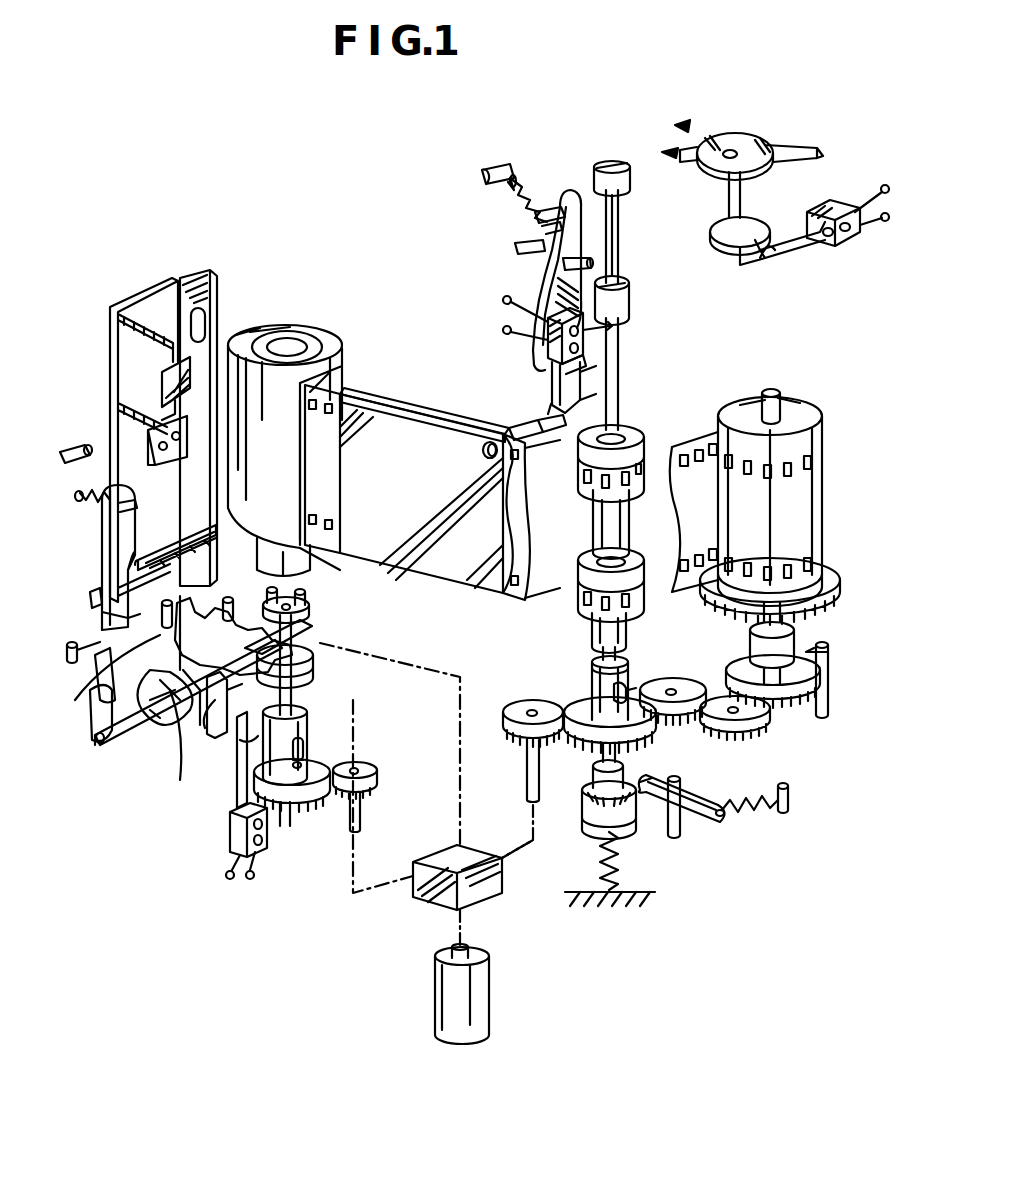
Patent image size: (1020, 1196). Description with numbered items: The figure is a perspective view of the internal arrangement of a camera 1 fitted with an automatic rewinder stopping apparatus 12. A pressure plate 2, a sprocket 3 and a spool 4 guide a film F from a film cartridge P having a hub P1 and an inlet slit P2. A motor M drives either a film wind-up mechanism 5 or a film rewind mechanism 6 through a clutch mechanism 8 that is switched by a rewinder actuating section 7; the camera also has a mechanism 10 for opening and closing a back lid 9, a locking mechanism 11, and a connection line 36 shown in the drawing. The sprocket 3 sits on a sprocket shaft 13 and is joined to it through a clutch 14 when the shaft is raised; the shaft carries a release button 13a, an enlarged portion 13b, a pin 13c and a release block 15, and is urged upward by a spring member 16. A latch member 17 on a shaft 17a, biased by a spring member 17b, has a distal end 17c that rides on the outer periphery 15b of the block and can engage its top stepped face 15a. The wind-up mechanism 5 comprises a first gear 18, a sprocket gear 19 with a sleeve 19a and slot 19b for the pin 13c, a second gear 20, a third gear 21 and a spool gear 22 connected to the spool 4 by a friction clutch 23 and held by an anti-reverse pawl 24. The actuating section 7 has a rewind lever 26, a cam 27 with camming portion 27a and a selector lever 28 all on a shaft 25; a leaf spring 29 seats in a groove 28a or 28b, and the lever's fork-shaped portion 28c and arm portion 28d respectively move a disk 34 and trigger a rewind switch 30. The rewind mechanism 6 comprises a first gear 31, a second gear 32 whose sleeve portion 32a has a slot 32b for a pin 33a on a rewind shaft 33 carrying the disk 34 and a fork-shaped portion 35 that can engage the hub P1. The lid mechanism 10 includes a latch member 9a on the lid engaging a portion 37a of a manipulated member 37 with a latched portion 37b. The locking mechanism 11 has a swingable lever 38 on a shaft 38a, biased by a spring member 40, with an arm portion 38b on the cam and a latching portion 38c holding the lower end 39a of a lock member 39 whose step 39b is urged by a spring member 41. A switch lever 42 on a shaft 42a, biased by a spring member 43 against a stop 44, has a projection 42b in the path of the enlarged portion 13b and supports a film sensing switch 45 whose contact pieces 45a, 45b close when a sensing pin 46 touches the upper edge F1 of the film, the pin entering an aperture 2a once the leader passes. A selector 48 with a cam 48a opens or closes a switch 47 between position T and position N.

The camera 1 is at (333, 165).
The pressure plate 2 is at (432, 410).
The aperture 2a is at (482, 451).
The sprocket 3 is at (628, 436).
The spool 4 is at (790, 406).
The film wind-up mechanism 5 is at (806, 729).
The film rewind mechanism 6 is at (332, 739).
The rewinder actuating section 7 is at (128, 776).
The clutch mechanism 8 is at (480, 895).
The back lid 9 is at (150, 298).
The latch member 9a is at (155, 435).
The mechanism for opening and closing back lid 10 is at (195, 250).
The locking mechanism 11 is at (86, 550).
The automatic rewinder stopping apparatus 12 is at (644, 102).
The sprocket shaft 13 is at (622, 234).
The release button 13a is at (620, 162).
The enlarged portion 13b is at (630, 292).
The pin 13c is at (626, 690).
The clutch 14 is at (626, 630).
The release block 15 is at (626, 830).
The top stepped face 15a is at (596, 788).
The outer periphery 15b is at (588, 822).
The spring member 16 is at (622, 866).
The latch member 17 is at (690, 812).
The shaft 17a is at (682, 781).
The spring member 17b is at (760, 808).
The distal end 17c is at (642, 780).
The first gear 18 is at (518, 702).
The sprocket gear 19 is at (585, 700).
The sleeve 19a is at (600, 662).
The slot 19b is at (606, 690).
The second gear 20 is at (682, 688).
The third gear 21 is at (750, 735).
The spool gear 22 is at (795, 665).
The friction clutch 23 is at (755, 648).
The anti-reverse pawl 24 is at (830, 658).
The shaft 25 is at (145, 740).
The rewind lever 26 is at (95, 745).
The cam 27 is at (150, 715).
The camming portion 27a is at (178, 790).
The selector lever 28 is at (214, 630).
The groove 28a is at (215, 700).
The groove 28b is at (228, 620).
The fork-shaped portion 28c is at (238, 770).
The arm portion 28d is at (215, 740).
The leaf spring 29 is at (255, 490).
The rewind switch 30 is at (232, 820).
The first gear 31 is at (378, 772).
The second gear 32 is at (294, 810).
The sleeve portion 32a is at (303, 746).
The slot 32b is at (306, 753).
The rewind shaft 33 is at (293, 640).
The pin 33a is at (305, 760).
The disk 34 is at (315, 653).
The fork-shaped portion 35 is at (312, 598).
The connection line 36 is at (458, 677).
The manipulated member 37 is at (210, 290).
The portion 37a is at (168, 380).
The latched portion 37b is at (170, 556).
The swingable lever 38 is at (106, 574).
The shaft 38a is at (92, 688).
The arm portion 38b is at (100, 688).
The latching portion 38c is at (92, 596).
The lock member 39 is at (80, 496).
The lower end 39a is at (100, 612).
The step 39b is at (118, 507).
The spring member 40 is at (72, 638).
The spring member 41 is at (88, 475).
The switch lever 42 is at (540, 229).
The shaft 42a is at (565, 265).
The projection 42b is at (612, 329).
The spring member 43 is at (548, 205).
The stop 44 is at (537, 213).
The film sensing switch 45 is at (555, 348).
The contact piece 45a is at (560, 367).
The contact piece 45b is at (605, 364).
The sensing pin 46 is at (540, 425).
The switch 47 is at (840, 240).
The selector 48 is at (750, 143).
The cam 48a is at (758, 230).
The film cartridge P is at (282, 326).
The hub P1 is at (316, 548).
The inlet slit P2 is at (308, 384).
The film F is at (335, 405).
The upper edge F1 is at (528, 462).
The motor M is at (490, 985).
The position N is at (676, 120).
The position T is at (662, 152).